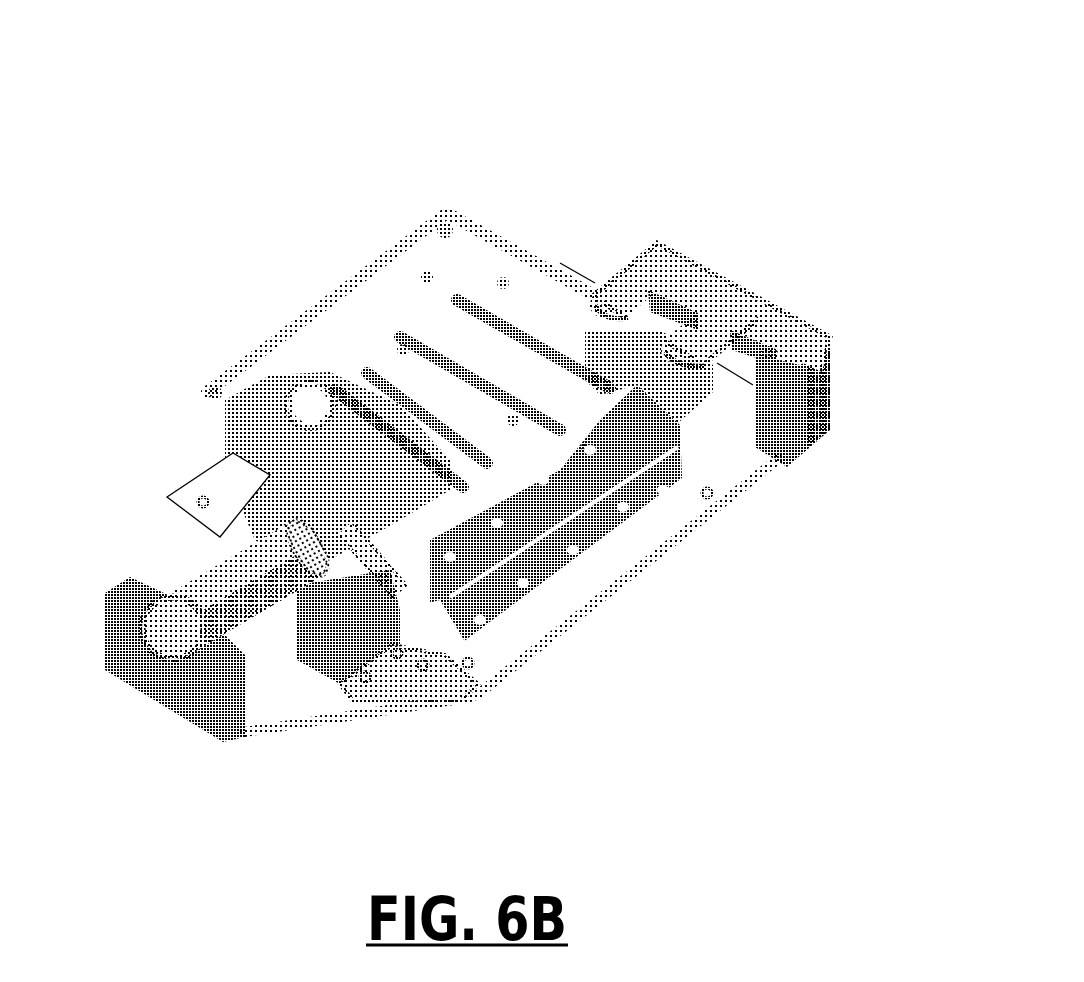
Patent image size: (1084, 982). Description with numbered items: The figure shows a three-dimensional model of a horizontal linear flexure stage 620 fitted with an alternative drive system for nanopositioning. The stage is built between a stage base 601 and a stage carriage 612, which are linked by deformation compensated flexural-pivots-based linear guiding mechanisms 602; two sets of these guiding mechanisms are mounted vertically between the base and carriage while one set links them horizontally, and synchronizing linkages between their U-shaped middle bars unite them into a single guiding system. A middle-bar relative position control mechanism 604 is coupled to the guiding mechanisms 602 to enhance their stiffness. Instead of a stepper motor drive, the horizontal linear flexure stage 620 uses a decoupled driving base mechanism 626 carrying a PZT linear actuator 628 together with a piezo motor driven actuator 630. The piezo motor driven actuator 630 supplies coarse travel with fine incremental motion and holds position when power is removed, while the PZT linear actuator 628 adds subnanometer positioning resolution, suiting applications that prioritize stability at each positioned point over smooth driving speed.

The horizontal linear flexure stage 620 is at (484, 35).
The stage base 601 is at (522, 627).
The deformation compensated flexural-pivots-based linear guiding mechanisms 602 is at (627, 510).
The middle-bar relative position control mechanism 604 is at (697, 288).
The stage carriage 612 is at (385, 300).
The decoupled driving base mechanism 626 is at (402, 687).
The PZT linear actuator 628 is at (355, 478).
The piezo motor driven actuator 630 is at (165, 670).